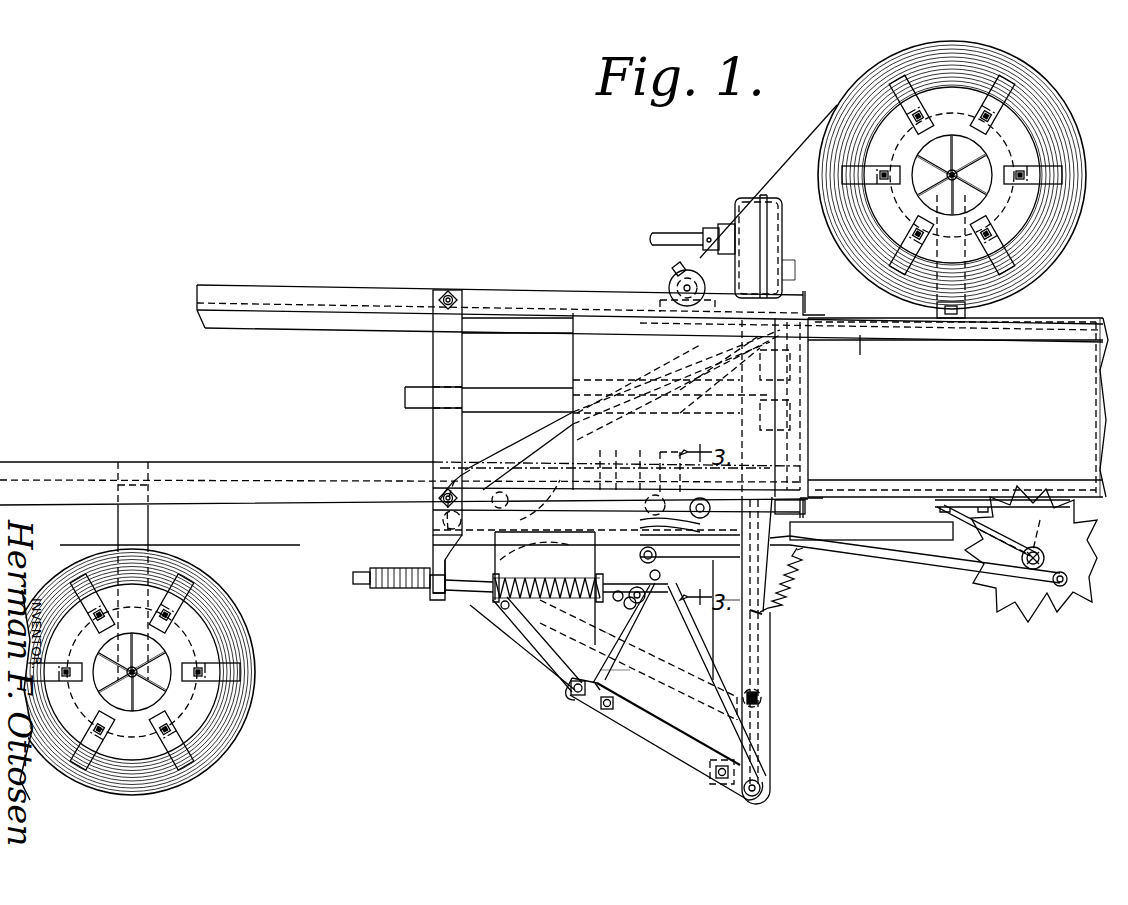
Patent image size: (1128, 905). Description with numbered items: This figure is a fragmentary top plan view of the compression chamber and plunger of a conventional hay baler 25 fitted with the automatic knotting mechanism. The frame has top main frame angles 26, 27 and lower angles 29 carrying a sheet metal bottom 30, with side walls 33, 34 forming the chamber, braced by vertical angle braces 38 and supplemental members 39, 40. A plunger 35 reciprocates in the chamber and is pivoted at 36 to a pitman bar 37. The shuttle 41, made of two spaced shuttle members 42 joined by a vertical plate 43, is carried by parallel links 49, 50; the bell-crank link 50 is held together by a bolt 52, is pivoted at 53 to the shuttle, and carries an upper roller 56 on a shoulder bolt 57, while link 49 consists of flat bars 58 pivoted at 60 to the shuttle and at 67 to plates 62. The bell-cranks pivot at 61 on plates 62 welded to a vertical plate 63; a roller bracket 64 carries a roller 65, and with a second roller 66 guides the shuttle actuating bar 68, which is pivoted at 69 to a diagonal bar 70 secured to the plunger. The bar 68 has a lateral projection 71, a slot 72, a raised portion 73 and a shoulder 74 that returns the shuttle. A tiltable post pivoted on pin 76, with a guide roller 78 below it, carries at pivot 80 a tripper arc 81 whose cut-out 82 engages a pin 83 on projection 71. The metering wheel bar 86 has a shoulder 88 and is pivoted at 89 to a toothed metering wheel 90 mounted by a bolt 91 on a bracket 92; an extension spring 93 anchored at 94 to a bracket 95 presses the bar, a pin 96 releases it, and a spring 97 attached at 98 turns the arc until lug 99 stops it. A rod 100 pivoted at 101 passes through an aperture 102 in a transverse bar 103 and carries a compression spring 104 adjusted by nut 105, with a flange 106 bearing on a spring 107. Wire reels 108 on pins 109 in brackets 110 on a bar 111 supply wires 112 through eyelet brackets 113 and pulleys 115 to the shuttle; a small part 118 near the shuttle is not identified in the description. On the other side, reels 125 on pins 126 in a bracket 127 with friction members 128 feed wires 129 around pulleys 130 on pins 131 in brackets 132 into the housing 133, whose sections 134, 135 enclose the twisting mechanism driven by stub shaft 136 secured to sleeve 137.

The hay baler 25 is at (863, 353).
The top main frame member 26 is at (1057, 325).
The top main frame member 27 is at (1019, 533).
The lower main frame member 29 is at (638, 397).
The sheet metal bottom 30 is at (958, 407).
The sheet metal side wall 33 is at (390, 328).
The sheet metal side wall 34 is at (510, 480).
The plunger 35 is at (592, 355).
The pivotal connection 36 is at (812, 374).
The pitman bar 37 is at (420, 387).
The vertical angle brace 38 is at (800, 293).
The supplemental angle main frame member 39 is at (262, 285).
The supplemental angle main frame member 40 is at (218, 482).
The shuttle 41 is at (780, 660).
The shuttle member 42 is at (770, 732).
The vertical plate 43 is at (770, 672).
The link 49 is at (670, 680).
The link 50 is at (642, 742).
The bolt 52 is at (605, 710).
The bolt 53 is at (762, 778).
The upper roller 56 is at (678, 604).
The shoulder bolt 57 is at (630, 633).
The flat bar 58 is at (642, 660).
The bolt 60 is at (760, 695).
The pivotal connection 61 is at (570, 700).
The plate 62 is at (522, 648).
The vertical plate 63 is at (545, 495).
The roller bracket 64 is at (546, 575).
The roller 65 is at (554, 588).
The second roller 66 is at (505, 519).
The pivotal connection 67 is at (498, 621).
The shuttle actuating bar 68 is at (525, 538).
The pivotal connection 69 is at (433, 537).
The diagonally disposed bar 70 is at (545, 440).
The laterally projecting portion 71 is at (617, 578).
The recess 72 is at (675, 514).
The raised portion 73 is at (726, 620).
The shoulder 74 is at (782, 536).
The pin 76 is at (678, 392).
The roller 78 is at (628, 471).
The pivot 80 is at (660, 563).
The tripper arc 81 is at (690, 551).
The cut out portion 82 is at (644, 590).
The pin 83 is at (619, 619).
The metering wheel bar 86 is at (922, 562).
The shoulder 88 is at (690, 535).
The pivotal attachment 89 is at (1064, 586).
The metering wheel 90 is at (1000, 602).
The bolt 91 is at (1045, 555).
The bracket 92 is at (937, 520).
The extension spring 93 is at (788, 571).
The spring connection 94 is at (766, 611).
The bracket 95 is at (731, 607).
The pin 96 is at (683, 569).
The spring 97 is at (594, 471).
The spring connection 98 is at (618, 585).
The lug 99 is at (627, 581).
The rod 100 is at (478, 593).
The pivotal connection 101 is at (632, 647).
The aperture 102 is at (450, 592).
The transverse bar 103 is at (442, 520).
The compression spring 104 is at (395, 590).
The nut 105 is at (360, 586).
The flange 106 is at (582, 595).
The spring 107 is at (514, 576).
The wire reel 108 is at (34, 580).
The pin 109 is at (125, 685).
The bracket 110 is at (125, 520).
The bar 111 is at (145, 470).
The wire 112 is at (666, 473).
The eyelet bracket 113 is at (459, 572).
The grooved pulley 115 is at (708, 778).
The block 118 is at (790, 508).
The wire reel 125 is at (1065, 108).
The pin 126 is at (950, 170).
The bracket 127 is at (968, 311).
The tension member 128 is at (1060, 243).
The wire 129 is at (812, 128).
The pulley 130 is at (670, 292).
The pin 131 is at (697, 281).
The bracket 132 is at (672, 270).
The housing 133 is at (735, 205).
The housing section 134 is at (742, 200).
The housing section 135 is at (777, 202).
The stub shaft 136 is at (668, 233).
The sleeve 137 is at (705, 228).